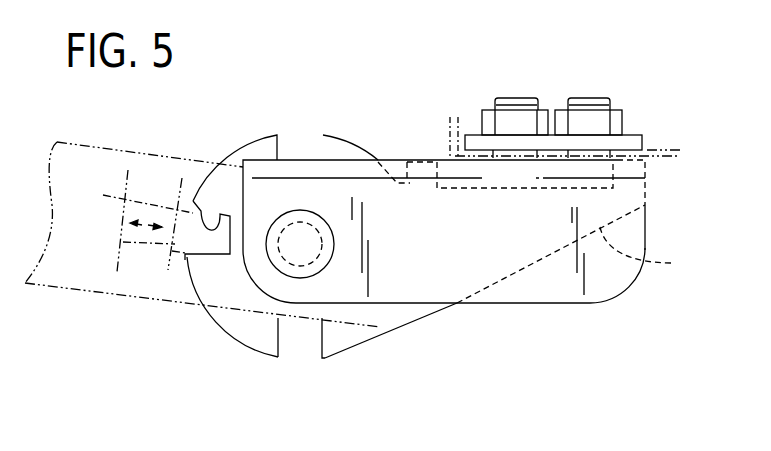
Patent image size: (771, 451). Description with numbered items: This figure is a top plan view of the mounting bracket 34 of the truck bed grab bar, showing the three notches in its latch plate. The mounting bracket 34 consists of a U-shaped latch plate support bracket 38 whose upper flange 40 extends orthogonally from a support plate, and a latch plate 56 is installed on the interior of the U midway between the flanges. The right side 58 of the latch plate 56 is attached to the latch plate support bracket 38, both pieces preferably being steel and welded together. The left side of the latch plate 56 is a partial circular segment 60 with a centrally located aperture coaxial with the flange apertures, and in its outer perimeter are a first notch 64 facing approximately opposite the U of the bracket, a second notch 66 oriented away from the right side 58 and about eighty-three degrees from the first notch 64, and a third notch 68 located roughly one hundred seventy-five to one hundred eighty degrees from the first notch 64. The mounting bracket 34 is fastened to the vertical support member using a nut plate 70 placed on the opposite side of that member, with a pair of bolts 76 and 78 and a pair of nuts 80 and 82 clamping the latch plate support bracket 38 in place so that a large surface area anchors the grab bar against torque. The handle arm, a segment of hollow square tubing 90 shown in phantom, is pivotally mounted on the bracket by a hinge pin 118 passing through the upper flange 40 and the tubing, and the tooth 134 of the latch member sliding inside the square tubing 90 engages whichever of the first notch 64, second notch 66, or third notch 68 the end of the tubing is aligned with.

The mounting bracket 34 is at (646, 173).
The latch plate support bracket 38 is at (567, 304).
The upper flange 40 is at (622, 292).
The latch plate 56 is at (419, 322).
The right side of the latch plate 58 is at (651, 253).
The partial circular segment 60 is at (228, 327).
The first notch 64 is at (322, 152).
The second notch 66 is at (202, 215).
The third notch 68 is at (320, 337).
The nut plate 70 is at (630, 143).
The bolt 76 is at (517, 97).
The bolt 78 is at (587, 97).
The nut 80 is at (615, 115).
The nut 82 is at (488, 122).
The hollow square tubing 90 is at (83, 293).
The hinge pin 118 is at (300, 210).
The tooth 134 is at (103, 190).